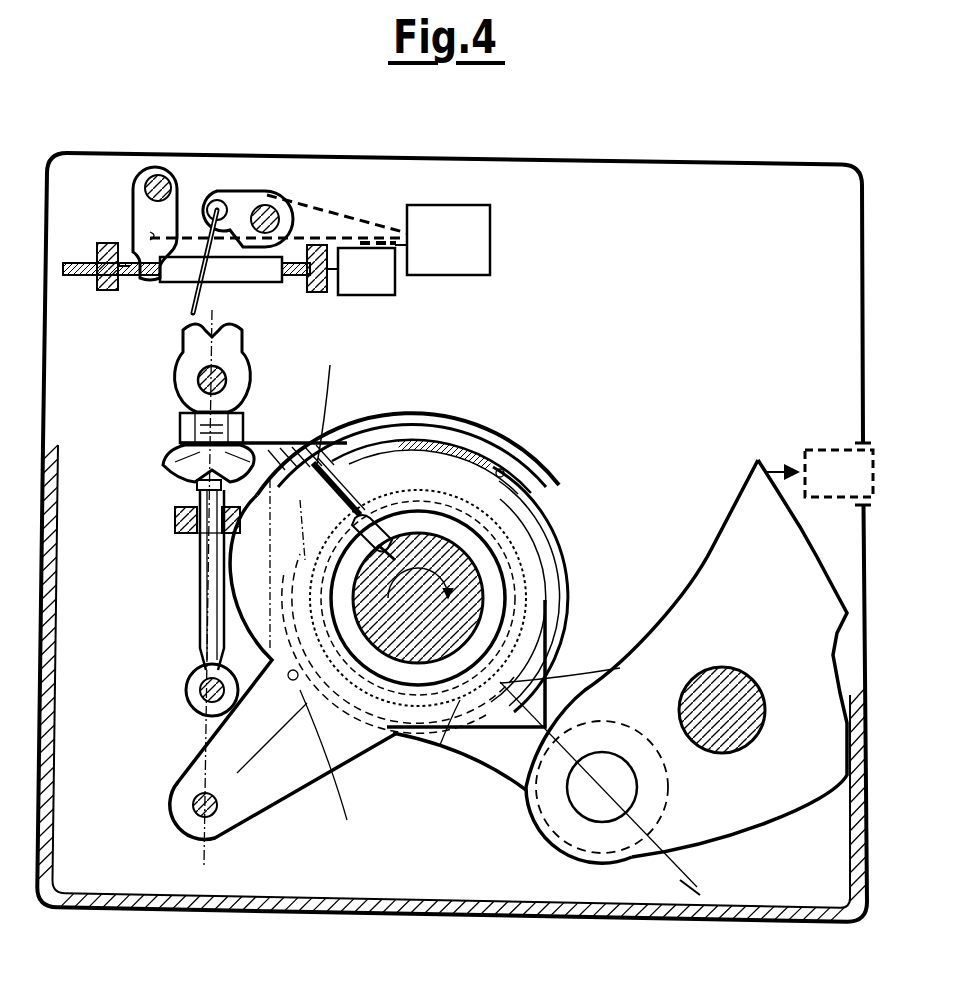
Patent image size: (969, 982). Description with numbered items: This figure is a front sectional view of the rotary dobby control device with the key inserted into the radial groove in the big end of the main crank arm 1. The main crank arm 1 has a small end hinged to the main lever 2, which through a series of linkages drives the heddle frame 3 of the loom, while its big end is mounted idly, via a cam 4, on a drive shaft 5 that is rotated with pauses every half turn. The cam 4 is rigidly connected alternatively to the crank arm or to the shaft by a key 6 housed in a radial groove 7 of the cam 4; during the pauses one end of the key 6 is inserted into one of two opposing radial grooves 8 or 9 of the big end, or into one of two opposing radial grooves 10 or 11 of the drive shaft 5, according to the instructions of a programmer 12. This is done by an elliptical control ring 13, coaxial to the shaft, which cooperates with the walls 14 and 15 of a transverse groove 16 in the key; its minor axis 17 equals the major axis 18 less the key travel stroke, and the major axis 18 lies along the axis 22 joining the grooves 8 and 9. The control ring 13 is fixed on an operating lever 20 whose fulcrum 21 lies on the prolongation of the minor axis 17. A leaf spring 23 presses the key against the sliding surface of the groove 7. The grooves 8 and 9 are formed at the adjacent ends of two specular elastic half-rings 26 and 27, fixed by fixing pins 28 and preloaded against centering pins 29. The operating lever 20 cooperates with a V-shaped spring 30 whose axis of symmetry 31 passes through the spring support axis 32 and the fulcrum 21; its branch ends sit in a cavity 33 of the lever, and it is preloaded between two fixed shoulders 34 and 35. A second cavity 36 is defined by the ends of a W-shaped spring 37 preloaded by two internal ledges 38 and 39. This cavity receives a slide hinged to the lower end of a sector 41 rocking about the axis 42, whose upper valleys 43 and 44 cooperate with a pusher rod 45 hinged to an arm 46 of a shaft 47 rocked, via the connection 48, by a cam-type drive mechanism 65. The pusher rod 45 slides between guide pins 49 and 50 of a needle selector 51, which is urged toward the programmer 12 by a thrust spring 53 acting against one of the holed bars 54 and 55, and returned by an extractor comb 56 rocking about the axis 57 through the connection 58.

The main crank arm 1 is at (500, 751).
The main lever 2 is at (775, 809).
The heddle frame 3 is at (826, 459).
The cam 4 is at (372, 462).
The drive shaft 5 is at (563, 578).
The key 6 is at (343, 536).
The radial groove 7 is at (305, 509).
The radial groove 8 is at (322, 461).
The radial groove 9 is at (510, 679).
The radial groove 10 is at (340, 613).
The radial groove 11 is at (455, 736).
The programmer 12 is at (380, 280).
The control ring 13 is at (425, 501).
The wall of the transverse groove 14 is at (360, 549).
The wall of the transverse groove 15 is at (367, 531).
The transverse groove 16 is at (367, 516).
The minor axis 17 is at (400, 623).
The major axis 18 is at (565, 541).
The operating lever 20 is at (287, 781).
The fulcrum 21 is at (190, 806).
The axis 22 is at (690, 886).
The leaf spring 23 is at (300, 546).
The elastic half-ring 26 is at (482, 459).
The elastic half-ring 27 is at (398, 695).
The fixing pin 28 is at (505, 469).
The centering pin 29 is at (485, 511).
The V-shaped spring 30 is at (198, 593).
The axis of symmetry 31 is at (190, 361).
The spring support axis 32 is at (186, 691).
The cavity 33 is at (178, 521).
The fixed shoulder 34 is at (200, 529).
The fixed shoulder 35 is at (205, 546).
The second cavity 36 is at (180, 435).
The W-shaped spring 37 is at (170, 461).
The internal ledge 38 is at (185, 471).
The internal ledge 39 is at (232, 441).
The sector 41 is at (182, 346).
The axis 42 is at (198, 385).
The valley 43 is at (186, 331).
The valley 44 is at (240, 329).
The pusher rod 45 is at (210, 200).
The arm 46 is at (245, 192).
The shaft 47 is at (268, 204).
The connection 48 is at (330, 214).
The guide pin 49 is at (196, 280).
The guide pin 50 is at (218, 280).
The needle selector 51 is at (312, 292).
The thrust spring 53 is at (115, 290).
The holed bar 54 is at (103, 245).
The holed bar 55 is at (330, 291).
The return extractor comb 56 is at (142, 212).
The axis 57 is at (157, 176).
The connection 58 is at (375, 240).
The drive mechanism 65 is at (465, 235).